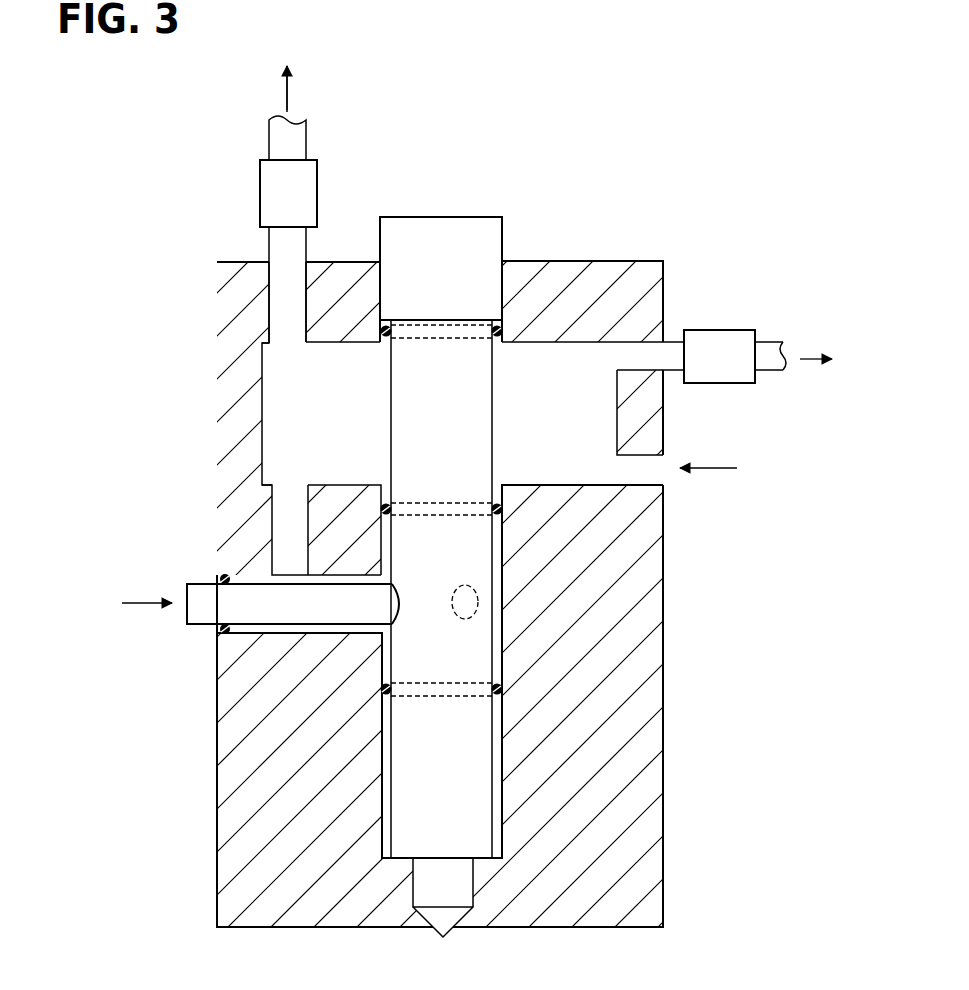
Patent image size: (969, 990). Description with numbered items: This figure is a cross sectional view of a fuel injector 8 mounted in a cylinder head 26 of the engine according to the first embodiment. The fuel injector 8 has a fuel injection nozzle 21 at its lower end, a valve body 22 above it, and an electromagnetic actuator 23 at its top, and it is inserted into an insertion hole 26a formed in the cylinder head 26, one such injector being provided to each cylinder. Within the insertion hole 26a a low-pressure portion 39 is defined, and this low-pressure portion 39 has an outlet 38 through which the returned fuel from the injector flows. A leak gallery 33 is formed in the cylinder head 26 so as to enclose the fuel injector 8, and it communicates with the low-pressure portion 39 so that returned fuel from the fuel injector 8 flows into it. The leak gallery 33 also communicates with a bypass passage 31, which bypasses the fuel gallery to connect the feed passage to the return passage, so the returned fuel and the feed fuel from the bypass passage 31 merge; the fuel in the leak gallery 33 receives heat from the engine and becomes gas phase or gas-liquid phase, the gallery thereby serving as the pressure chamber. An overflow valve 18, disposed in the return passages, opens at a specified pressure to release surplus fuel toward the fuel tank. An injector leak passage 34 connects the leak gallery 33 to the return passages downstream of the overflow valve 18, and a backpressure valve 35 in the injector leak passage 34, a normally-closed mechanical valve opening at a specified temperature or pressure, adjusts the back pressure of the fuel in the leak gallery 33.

The fuel injector 8 is at (503, 244).
The overflow valve 18 is at (722, 340).
The fuel injection nozzle 21 is at (438, 928).
The valve body 22 is at (473, 653).
The electromagnetic actuator 23 is at (461, 228).
The cylinder head 26 is at (242, 707).
The insertion hole 26a is at (385, 652).
The bypass passage 31 is at (619, 344).
The leak gallery 33 is at (283, 390).
The injector leak passage 34 is at (278, 137).
The backpressure valve 35 is at (268, 176).
The outlet 38 is at (478, 603).
The low-pressure portion 39 is at (383, 543).